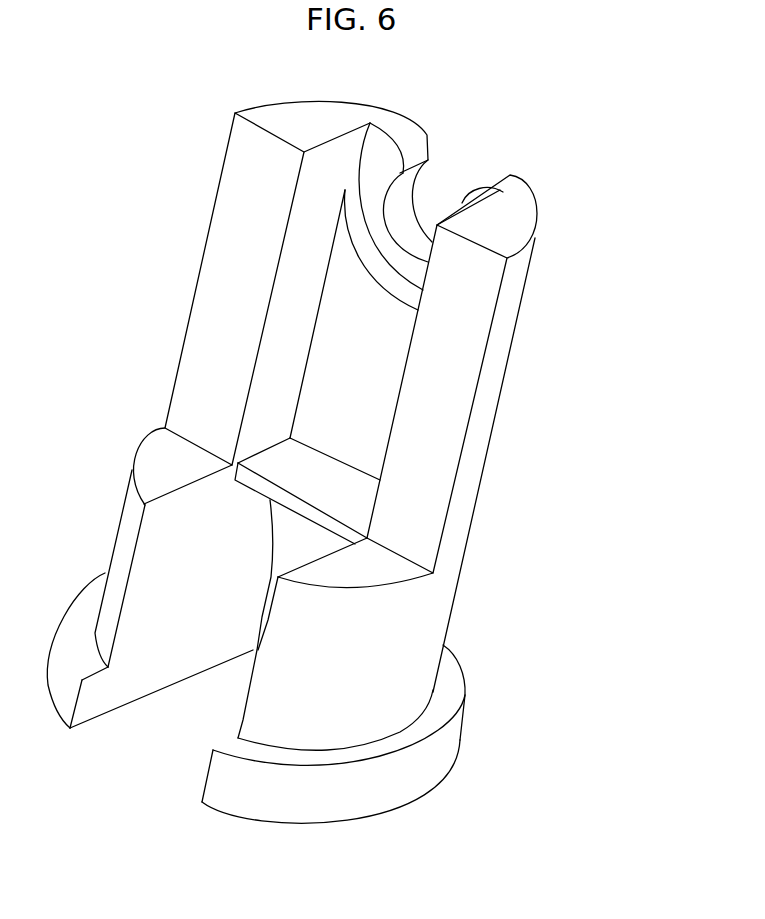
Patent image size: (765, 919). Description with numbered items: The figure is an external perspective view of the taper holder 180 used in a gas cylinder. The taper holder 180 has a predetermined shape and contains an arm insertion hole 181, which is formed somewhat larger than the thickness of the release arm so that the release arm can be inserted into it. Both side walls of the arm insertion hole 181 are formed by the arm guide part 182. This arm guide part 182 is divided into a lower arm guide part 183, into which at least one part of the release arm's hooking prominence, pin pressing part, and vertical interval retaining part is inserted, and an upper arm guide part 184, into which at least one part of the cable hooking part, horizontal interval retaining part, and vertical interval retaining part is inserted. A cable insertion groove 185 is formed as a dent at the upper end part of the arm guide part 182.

The taper holder 180 is at (583, 228).
The arm insertion hole 181 is at (256, 623).
The arm guide part 182 is at (586, 452).
The lower arm guide part 183 is at (430, 623).
The upper arm guide part 184 is at (480, 402).
The cable insertion groove 185 is at (411, 232).